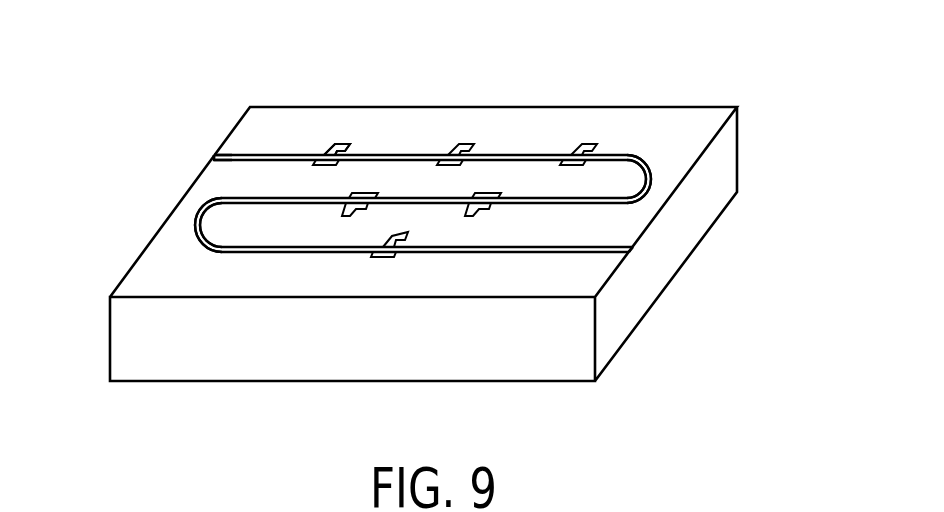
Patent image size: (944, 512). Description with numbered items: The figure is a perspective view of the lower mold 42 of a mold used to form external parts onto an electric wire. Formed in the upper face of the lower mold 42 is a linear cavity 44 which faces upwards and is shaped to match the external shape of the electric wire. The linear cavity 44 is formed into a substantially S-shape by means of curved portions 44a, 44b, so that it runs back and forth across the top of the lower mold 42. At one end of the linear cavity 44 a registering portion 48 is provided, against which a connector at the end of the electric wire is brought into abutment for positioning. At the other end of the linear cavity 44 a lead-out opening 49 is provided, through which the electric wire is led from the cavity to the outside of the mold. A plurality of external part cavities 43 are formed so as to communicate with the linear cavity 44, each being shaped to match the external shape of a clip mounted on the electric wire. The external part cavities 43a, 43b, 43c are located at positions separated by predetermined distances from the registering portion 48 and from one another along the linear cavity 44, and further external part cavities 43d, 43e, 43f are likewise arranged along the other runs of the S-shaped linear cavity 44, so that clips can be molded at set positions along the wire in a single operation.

The lower mold 42 is at (672, 250).
The external part cavities 43 is at (325, 129).
The external part cavity 43a is at (358, 131).
The external part cavity 43b is at (482, 130).
The external part cavity 43c is at (603, 130).
The tab 43d is at (483, 232).
The tab 43e is at (338, 224).
The tab 43f is at (380, 268).
The linear cavity 44 is at (650, 155).
The curved portion 44a is at (665, 180).
The curved portion 44b is at (184, 221).
The registering portion 48 is at (203, 157).
The lead-out opening 49 is at (643, 257).